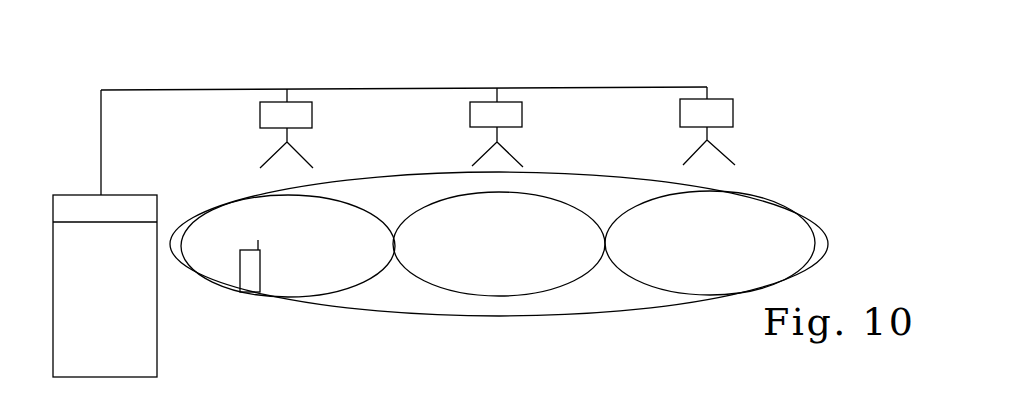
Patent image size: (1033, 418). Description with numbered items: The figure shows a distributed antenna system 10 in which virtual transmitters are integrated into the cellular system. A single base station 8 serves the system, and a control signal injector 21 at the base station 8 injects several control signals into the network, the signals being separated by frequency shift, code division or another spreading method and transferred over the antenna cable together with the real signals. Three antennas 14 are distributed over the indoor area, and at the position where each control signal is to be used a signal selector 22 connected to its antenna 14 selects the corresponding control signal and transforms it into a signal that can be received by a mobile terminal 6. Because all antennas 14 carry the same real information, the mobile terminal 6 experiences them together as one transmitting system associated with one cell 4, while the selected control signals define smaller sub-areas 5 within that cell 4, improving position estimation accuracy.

The cell 4 is at (607, 307).
The cell 5 is at (345, 283).
The mobile terminal 6 is at (258, 273).
The base station 8 is at (143, 353).
The communication system 10 is at (799, 170).
The antenna 14 is at (263, 167).
The control signal injector 21 is at (128, 202).
The signal selector 22 is at (312, 114).